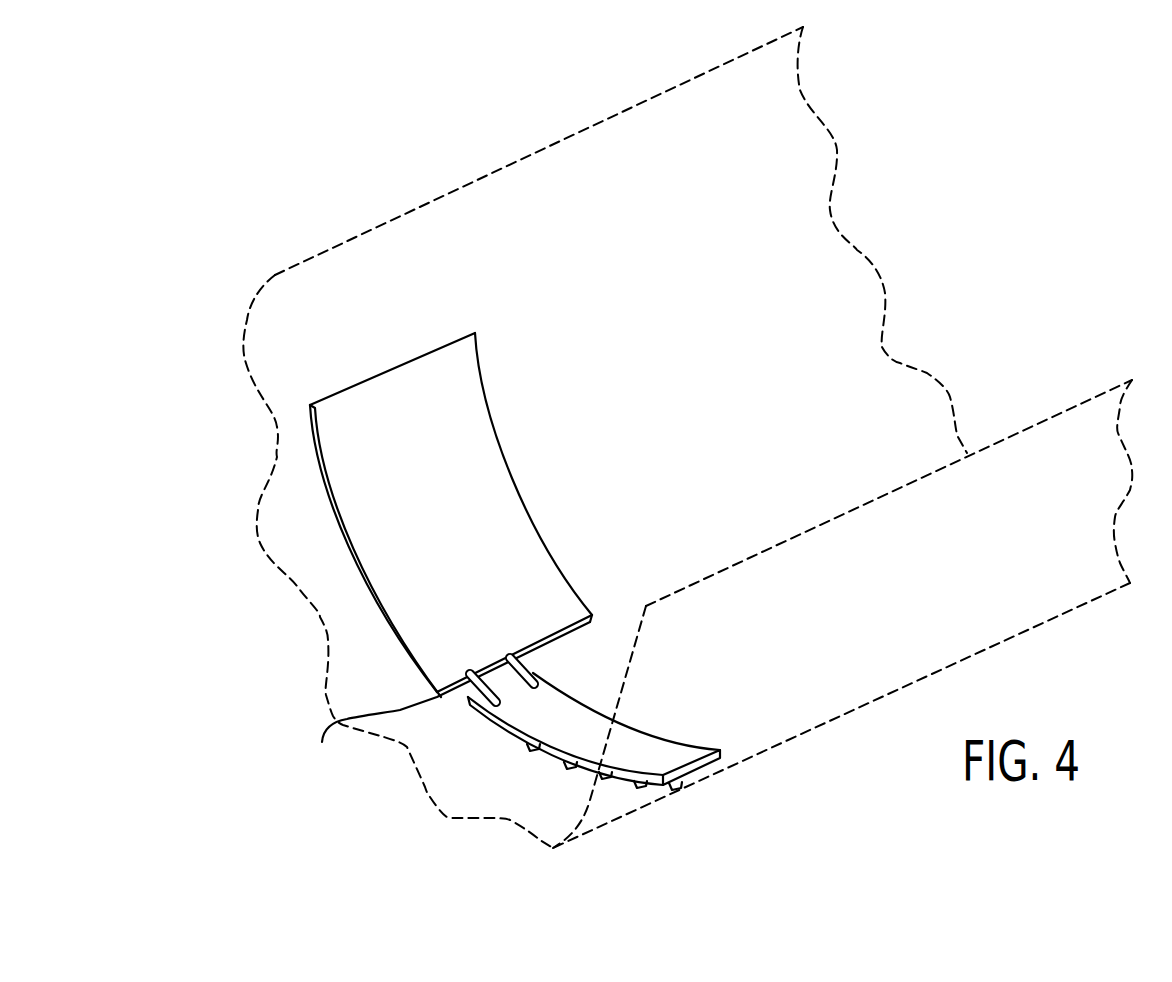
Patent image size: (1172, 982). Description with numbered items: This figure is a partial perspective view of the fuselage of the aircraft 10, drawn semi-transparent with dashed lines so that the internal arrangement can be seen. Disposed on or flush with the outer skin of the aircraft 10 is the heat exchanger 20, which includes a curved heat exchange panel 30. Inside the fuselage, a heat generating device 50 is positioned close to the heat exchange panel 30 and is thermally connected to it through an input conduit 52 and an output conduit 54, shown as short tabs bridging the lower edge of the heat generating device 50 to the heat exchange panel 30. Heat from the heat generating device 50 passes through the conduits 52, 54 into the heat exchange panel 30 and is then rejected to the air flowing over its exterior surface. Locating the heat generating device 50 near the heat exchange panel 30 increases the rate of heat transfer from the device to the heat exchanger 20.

The aircraft 10 is at (276, 279).
The heat exchanger 20 is at (593, 846).
The heat exchange panel 30 is at (562, 731).
The heat generating device 50 is at (353, 437).
The input conduit 52 is at (522, 656).
The output conduit 54 is at (445, 700).